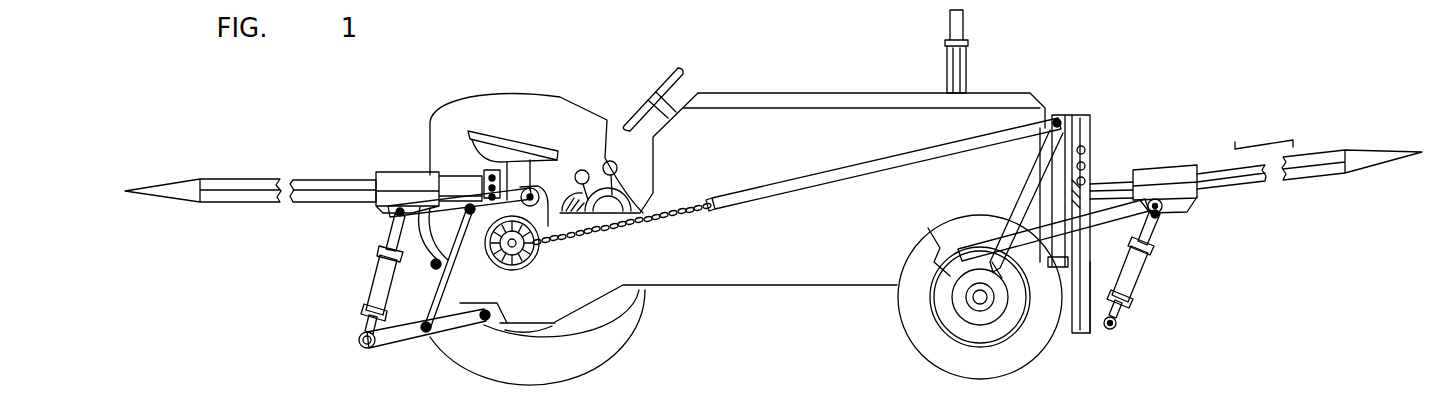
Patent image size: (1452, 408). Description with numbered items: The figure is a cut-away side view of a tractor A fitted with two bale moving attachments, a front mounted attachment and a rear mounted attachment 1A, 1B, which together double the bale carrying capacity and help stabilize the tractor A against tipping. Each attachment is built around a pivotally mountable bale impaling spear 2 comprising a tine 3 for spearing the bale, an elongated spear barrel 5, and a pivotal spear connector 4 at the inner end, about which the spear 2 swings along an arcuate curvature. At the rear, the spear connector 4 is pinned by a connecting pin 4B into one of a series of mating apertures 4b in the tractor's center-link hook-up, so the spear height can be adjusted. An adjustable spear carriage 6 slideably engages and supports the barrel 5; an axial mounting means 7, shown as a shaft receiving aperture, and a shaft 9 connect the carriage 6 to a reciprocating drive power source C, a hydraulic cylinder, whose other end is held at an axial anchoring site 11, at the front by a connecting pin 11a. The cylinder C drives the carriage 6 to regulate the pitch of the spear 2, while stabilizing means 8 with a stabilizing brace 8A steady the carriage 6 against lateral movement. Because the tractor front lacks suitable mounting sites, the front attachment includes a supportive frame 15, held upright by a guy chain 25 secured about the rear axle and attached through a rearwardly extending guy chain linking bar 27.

The tractor A is at (823, 96).
The bale moving attachment 1A is at (1159, 158).
The bale moving attachment 1B is at (255, 172).
The bale impaling spear 2 is at (262, 203).
The tine 3 is at (170, 182).
The pivotal spear connector 4 is at (480, 185).
The mating apertures 4b is at (486, 172).
The connecting pin 4B is at (1085, 192).
The spear barrel 5 is at (323, 178).
The adjustable spear carriage 6 is at (400, 172).
The axial mounting means 7 is at (398, 237).
The stabilizing means 8 is at (1122, 236).
The stabilizing brace 8A is at (438, 325).
The shaft 9 is at (397, 213).
The axial anchoring site 11 is at (352, 340).
The connecting pin 11a is at (1118, 324).
The supportive frame 15 is at (1087, 102).
The guy chain 25 is at (663, 216).
The guy chain linking bar 27 is at (757, 206).
The reciprocating drive power source C is at (372, 286).